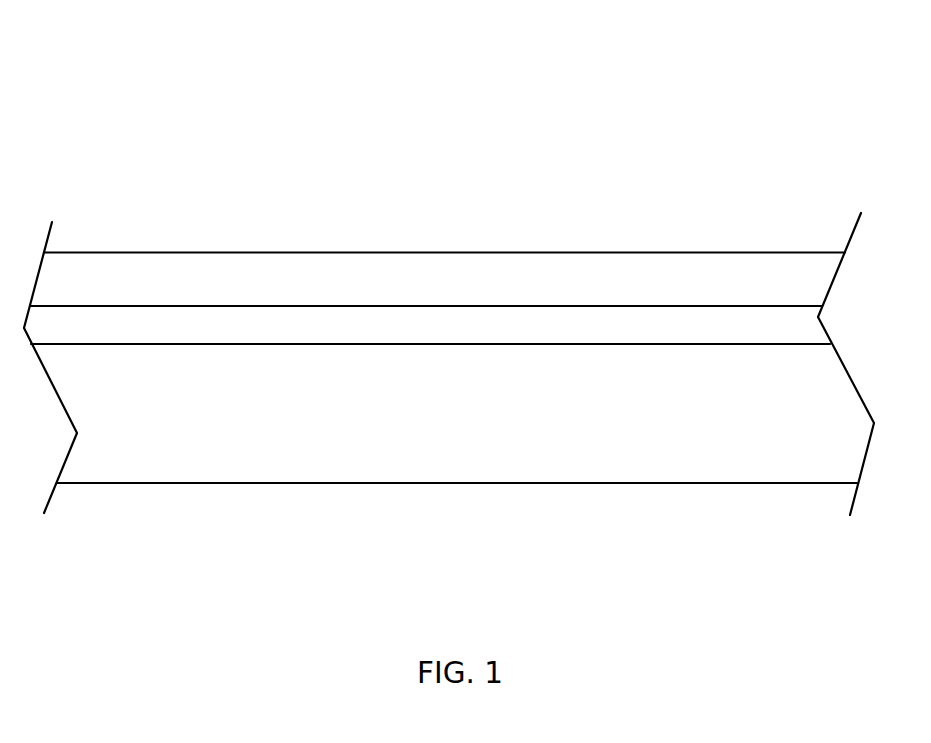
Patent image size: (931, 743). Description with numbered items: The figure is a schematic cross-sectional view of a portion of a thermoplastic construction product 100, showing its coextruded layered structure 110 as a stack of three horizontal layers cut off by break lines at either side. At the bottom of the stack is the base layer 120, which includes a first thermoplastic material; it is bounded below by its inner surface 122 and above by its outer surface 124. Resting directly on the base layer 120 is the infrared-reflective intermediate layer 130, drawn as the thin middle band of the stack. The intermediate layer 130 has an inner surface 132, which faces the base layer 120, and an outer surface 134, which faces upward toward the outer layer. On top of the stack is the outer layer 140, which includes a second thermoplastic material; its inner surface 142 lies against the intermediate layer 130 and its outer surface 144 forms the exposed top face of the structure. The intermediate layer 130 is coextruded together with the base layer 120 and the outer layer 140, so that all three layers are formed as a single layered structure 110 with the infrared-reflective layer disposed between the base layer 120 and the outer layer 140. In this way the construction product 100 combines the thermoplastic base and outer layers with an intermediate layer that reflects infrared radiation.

The construction product 100 is at (197, 108).
The coextruded layered structure 110 is at (703, 217).
The base layer 120 is at (449, 364).
The inner surface of base layer 122 is at (393, 483).
The outer surface of base layer 124 is at (386, 344).
The infrared-reflective intermediate layer 130 is at (426, 322).
The inner surface of infrared-reflective intermediate layer 132 is at (195, 345).
The outer surface of infrared-reflective intermediate layer 134 is at (181, 306).
The outer layer 140 is at (444, 273).
The inner surface of outer layer 142 is at (656, 306).
The outer surface of outer layer 144 is at (660, 253).